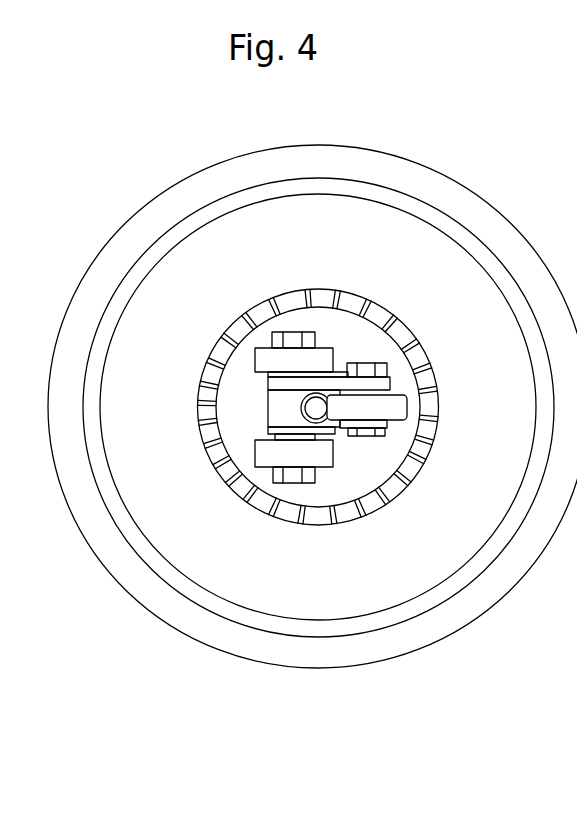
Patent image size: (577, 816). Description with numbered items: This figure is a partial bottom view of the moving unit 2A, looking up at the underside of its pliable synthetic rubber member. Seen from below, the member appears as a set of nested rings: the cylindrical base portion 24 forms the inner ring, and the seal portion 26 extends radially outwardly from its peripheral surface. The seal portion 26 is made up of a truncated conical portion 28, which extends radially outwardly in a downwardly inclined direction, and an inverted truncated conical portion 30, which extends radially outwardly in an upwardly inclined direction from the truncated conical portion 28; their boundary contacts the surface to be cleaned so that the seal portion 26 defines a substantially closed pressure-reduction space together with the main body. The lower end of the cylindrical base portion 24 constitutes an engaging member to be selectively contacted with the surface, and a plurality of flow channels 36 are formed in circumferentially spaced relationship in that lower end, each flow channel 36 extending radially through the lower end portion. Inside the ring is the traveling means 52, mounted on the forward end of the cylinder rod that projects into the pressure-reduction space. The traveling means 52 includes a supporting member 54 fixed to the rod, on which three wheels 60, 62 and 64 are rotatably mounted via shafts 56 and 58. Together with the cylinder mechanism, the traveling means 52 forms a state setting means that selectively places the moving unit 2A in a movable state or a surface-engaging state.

The moving unit 2A is at (118, 204).
The cylindrical base portion 24 is at (406, 479).
The seal portion 26 is at (188, 637).
The truncated conical portion 28 is at (382, 597).
The inverted truncated conical portion 30 is at (285, 653).
The flow channels 36 is at (437, 391).
The traveling means 52 is at (354, 353).
The supporting member 54 is at (338, 434).
The shaft 56 is at (293, 483).
The shaft 58 is at (363, 436).
The wheel 60 is at (262, 451).
The wheel 62 is at (262, 362).
The wheel 64 is at (396, 405).